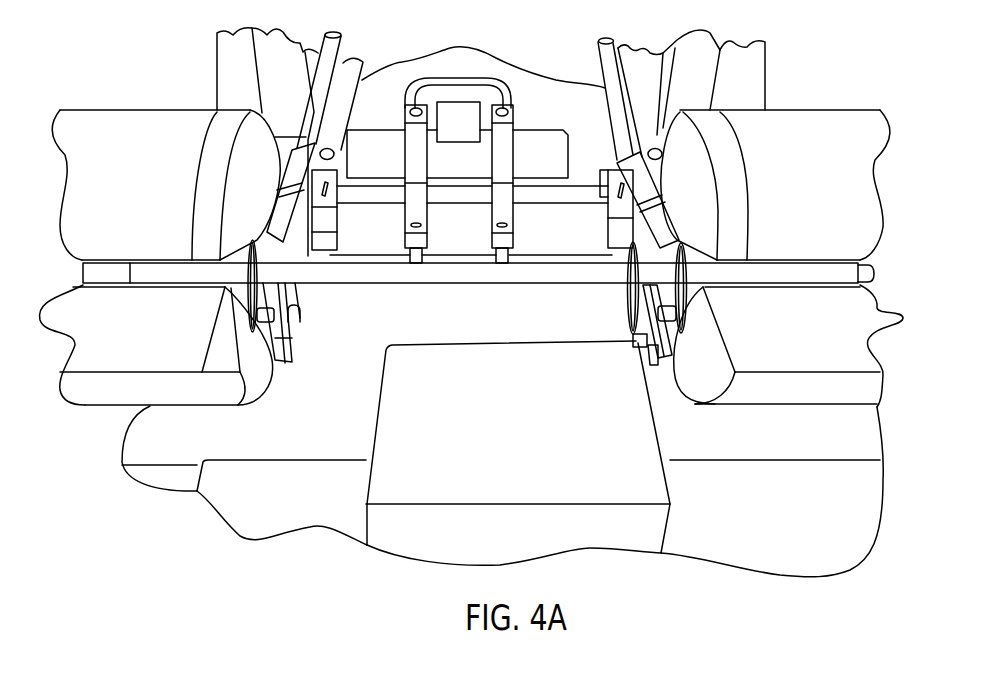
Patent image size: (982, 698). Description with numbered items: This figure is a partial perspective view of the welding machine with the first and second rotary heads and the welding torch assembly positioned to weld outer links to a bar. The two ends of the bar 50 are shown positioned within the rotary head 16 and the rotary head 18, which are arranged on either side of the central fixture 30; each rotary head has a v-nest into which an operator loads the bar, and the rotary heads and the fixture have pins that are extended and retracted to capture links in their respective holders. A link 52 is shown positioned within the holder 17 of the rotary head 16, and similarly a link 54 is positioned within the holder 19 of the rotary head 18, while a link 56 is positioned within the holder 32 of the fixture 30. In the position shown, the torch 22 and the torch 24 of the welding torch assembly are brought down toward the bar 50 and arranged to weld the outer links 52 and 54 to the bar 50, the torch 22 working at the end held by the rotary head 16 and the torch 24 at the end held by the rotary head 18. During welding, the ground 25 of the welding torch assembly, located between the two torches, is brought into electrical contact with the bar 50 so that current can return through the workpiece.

The rotary head 16 is at (153, 120).
The holder 17 is at (284, 333).
The rotary head 18 is at (800, 120).
The holder 19 is at (674, 368).
The torch 22 is at (293, 180).
The torch 24 is at (656, 185).
The ground 25 is at (518, 133).
The fixture 30 is at (525, 302).
The holder 32 is at (632, 340).
The bar 50 is at (453, 272).
The link 52 is at (247, 290).
The link 54 is at (694, 322).
The link 56 is at (626, 297).